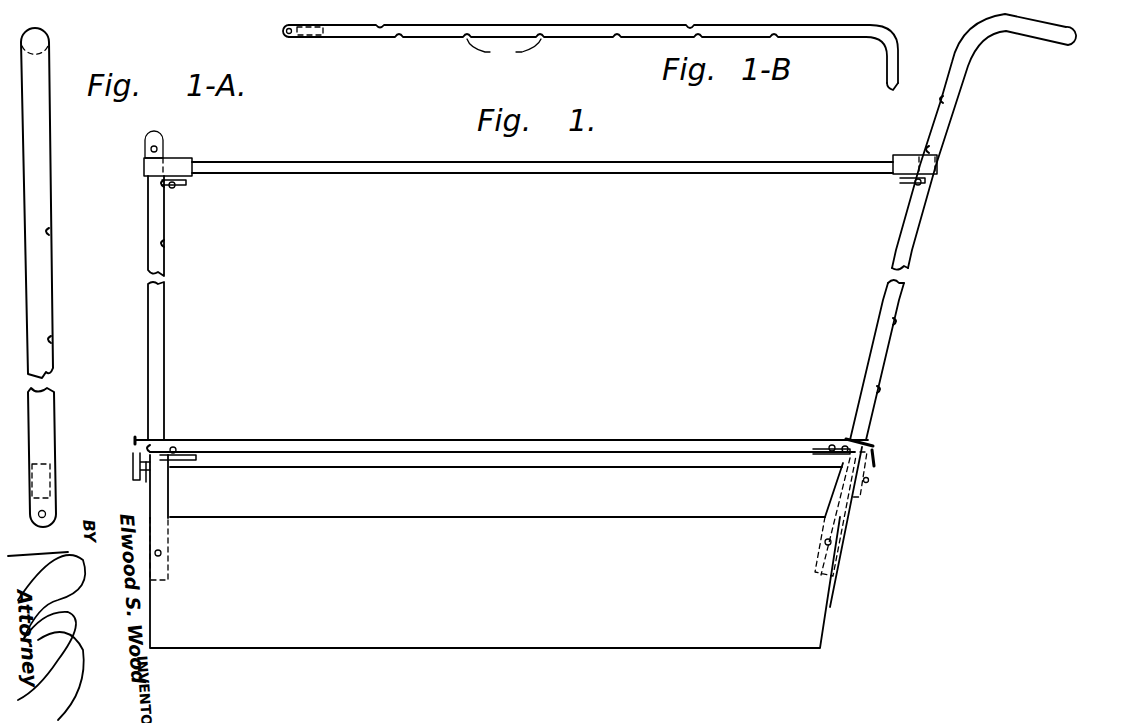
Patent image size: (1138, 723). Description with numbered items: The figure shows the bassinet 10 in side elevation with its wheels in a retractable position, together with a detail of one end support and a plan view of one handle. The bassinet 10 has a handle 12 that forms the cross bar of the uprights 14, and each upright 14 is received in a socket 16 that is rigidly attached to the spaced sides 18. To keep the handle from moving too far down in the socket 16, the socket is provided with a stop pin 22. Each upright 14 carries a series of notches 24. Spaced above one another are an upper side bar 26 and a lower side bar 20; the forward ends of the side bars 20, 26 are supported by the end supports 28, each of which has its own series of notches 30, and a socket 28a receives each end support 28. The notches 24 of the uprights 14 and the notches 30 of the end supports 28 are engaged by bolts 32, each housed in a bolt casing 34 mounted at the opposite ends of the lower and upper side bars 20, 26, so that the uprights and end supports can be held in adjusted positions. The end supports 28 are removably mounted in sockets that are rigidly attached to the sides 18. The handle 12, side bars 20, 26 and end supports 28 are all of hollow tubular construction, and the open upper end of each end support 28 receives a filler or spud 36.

In FIG. 1, the bassinet 10 is at (896, 354).
In FIG. 1B, the handle 12 is at (893, 91).
In FIG. 1, the handle 12 is at (1070, 37).
In FIG. 1B, the upright 14 is at (840, 37).
In FIG. 1, the upright 14 is at (918, 242).
In FIG. 1, the socket 16 is at (842, 507).
In FIG. 1, the side 18 is at (698, 590).
In FIG. 1, the lower side bar 20 is at (680, 452).
In FIG. 1, the stop pin 22 is at (161, 553).
In FIG. 1B, the notch 24 is at (504, 54).
In FIG. 1, the notch 24 is at (928, 185).
In FIG. 1, the upper side bar 26 is at (563, 174).
In FIG. 1A, the end support 28 is at (44, 208).
In FIG. 1, the end support 28 is at (165, 325).
In FIG. 1, the socket 28a is at (170, 508).
In FIG. 1A, the notch 30 is at (52, 341).
In FIG. 1, the notch 30 is at (156, 190).
In FIG. 1, the bolt 32 is at (173, 188).
In FIG. 1, the bolt casing 34 is at (186, 184).
In FIG. 1A, the filler or spud 36 is at (52, 476).
In FIG. 1B, the filler or spud 36 is at (311, 24).